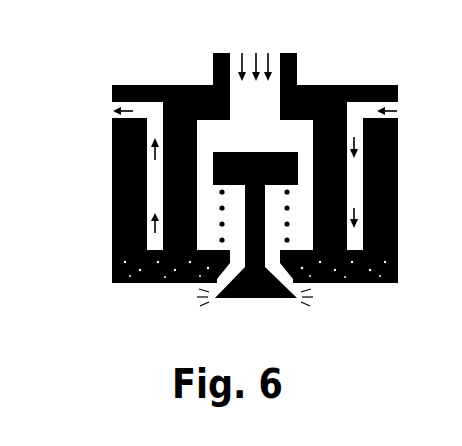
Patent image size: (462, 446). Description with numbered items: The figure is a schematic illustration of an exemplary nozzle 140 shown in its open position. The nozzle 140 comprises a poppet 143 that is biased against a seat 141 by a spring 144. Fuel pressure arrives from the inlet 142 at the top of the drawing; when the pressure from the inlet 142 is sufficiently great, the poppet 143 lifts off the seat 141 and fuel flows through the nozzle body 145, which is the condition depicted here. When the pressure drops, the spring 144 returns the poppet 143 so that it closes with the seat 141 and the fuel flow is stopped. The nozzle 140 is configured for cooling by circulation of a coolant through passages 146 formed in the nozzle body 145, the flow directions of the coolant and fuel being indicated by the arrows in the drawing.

The nozzle 140 is at (246, 171).
The seat 141 is at (217, 285).
The inlet 142 is at (240, 57).
The poppet 143 is at (262, 300).
The spring 144 is at (288, 208).
The nozzle body 145 is at (330, 108).
The passages 146 is at (355, 165).